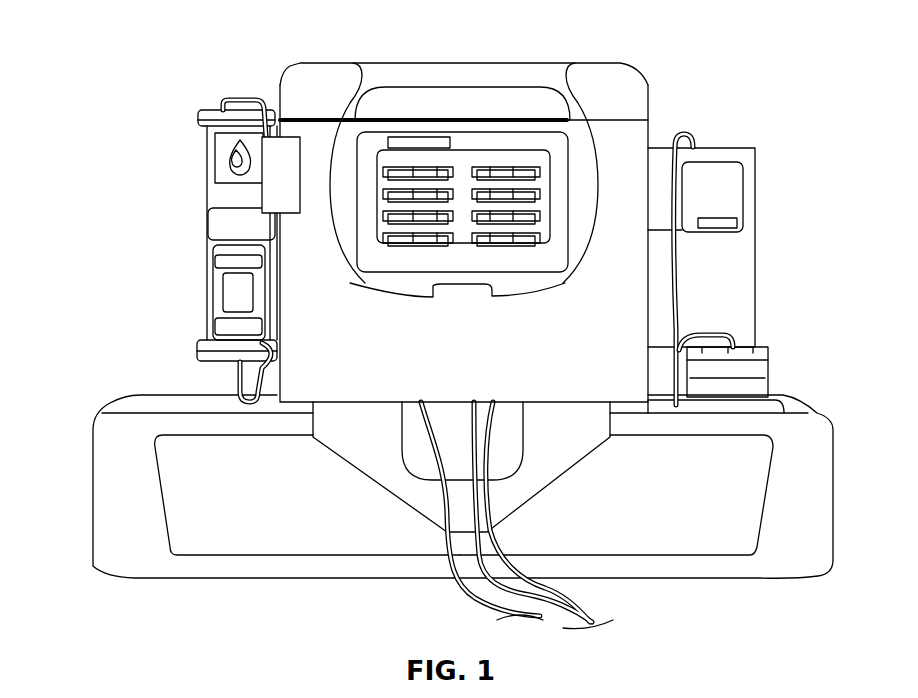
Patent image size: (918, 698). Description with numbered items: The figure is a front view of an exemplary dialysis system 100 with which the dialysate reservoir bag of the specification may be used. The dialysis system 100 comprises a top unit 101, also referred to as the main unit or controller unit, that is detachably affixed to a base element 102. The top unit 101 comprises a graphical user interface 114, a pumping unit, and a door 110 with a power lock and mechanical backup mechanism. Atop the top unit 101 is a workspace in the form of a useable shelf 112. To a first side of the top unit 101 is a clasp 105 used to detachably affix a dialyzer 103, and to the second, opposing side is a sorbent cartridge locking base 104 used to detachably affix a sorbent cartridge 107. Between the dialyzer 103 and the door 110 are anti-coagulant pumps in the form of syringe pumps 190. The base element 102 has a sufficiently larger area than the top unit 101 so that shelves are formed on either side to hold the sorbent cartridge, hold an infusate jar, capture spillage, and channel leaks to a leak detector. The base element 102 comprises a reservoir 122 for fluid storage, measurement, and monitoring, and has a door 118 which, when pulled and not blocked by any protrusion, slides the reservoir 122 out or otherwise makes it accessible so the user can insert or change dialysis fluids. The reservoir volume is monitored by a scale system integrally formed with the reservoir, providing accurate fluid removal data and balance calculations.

The dialysis system 100 is at (78, 36).
The top unit 101 is at (403, 128).
The base element 102 is at (100, 462).
The dialyzer 103 is at (212, 268).
The sorbent cartridge locking base 104 is at (770, 370).
The clasp 105 is at (222, 228).
The sorbent cartridge 107 is at (728, 318).
The door 110 is at (627, 147).
The useable shelf 112 is at (566, 34).
The graphical user interface 114 is at (335, 130).
The door 118 is at (202, 543).
The reservoir 122 is at (692, 540).
The syringe pumps 190 is at (283, 193).